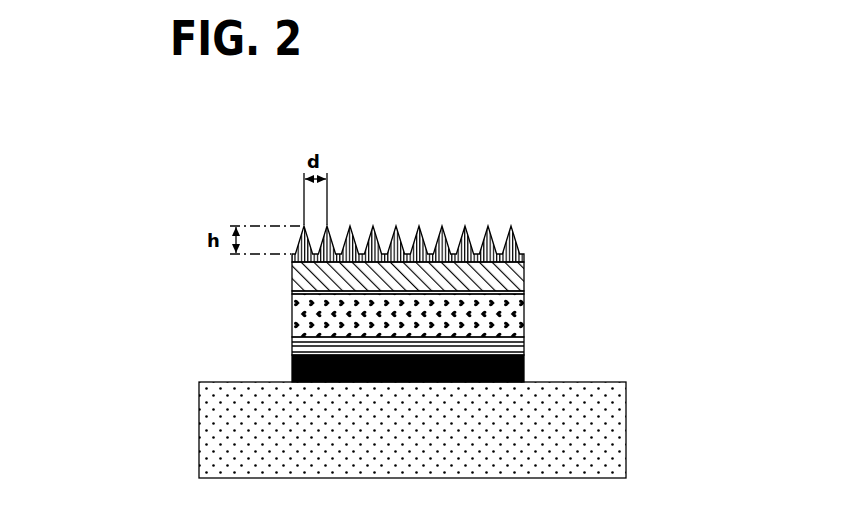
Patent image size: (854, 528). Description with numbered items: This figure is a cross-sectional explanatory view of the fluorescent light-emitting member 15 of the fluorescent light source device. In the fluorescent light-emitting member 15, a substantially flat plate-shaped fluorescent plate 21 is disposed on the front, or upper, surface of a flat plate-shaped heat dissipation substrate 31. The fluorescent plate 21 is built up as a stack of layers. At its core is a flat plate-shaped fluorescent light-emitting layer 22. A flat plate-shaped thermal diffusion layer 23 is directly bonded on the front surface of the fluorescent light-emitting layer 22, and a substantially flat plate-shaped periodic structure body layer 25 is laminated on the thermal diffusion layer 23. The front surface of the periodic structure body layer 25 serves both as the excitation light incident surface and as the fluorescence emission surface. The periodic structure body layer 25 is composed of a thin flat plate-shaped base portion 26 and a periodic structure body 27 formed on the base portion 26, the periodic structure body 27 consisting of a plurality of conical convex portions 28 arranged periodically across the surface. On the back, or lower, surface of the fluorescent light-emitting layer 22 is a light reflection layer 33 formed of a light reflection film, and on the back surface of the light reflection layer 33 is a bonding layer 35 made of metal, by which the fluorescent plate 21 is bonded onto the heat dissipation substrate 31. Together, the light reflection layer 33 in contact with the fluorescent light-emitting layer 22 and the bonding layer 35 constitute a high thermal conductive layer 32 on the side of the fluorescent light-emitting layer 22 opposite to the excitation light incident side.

The fluorescent light-emitting member 15 is at (192, 203).
The fluorescent plate 21 is at (640, 233).
The fluorescent light-emitting layer 22 is at (525, 318).
The thermal diffusion layer 23 is at (525, 280).
The periodic structure body layer 25 is at (593, 227).
The base portion 26 is at (525, 263).
The periodic structure body 27 is at (525, 239).
The convex portion 28 is at (463, 230).
The heat dissipation substrate 31 is at (626, 420).
The high thermal conductive layer 32 is at (595, 345).
The light reflection layer 33 is at (525, 347).
The bonding layer 35 is at (525, 363).